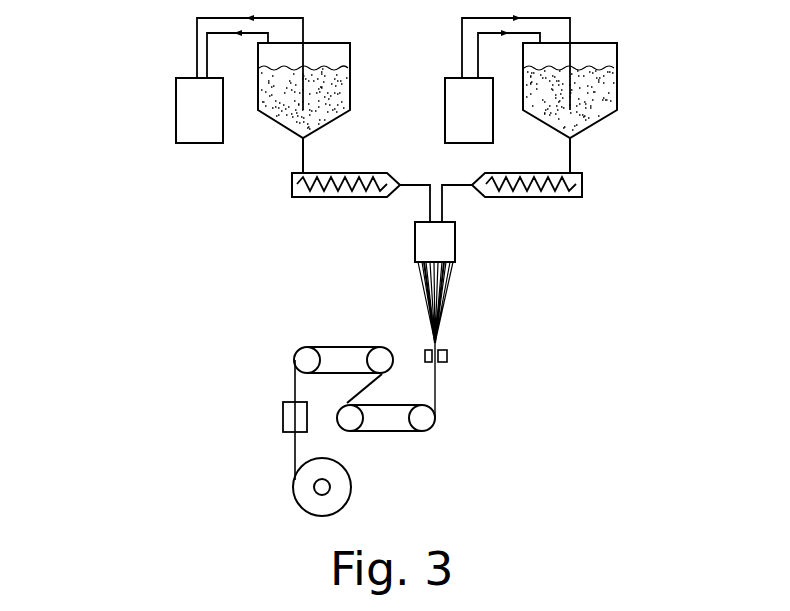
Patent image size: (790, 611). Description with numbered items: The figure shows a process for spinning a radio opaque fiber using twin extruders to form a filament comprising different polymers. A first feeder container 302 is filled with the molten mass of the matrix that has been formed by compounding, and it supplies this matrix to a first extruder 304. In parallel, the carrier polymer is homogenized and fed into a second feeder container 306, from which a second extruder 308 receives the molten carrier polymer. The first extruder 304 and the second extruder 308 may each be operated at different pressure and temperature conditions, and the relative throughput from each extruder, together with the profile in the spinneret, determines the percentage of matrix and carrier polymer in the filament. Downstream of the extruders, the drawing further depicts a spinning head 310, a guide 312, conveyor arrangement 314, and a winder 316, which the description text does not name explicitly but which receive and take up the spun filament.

The first feeder container 302 is at (303, 115).
The first extruder 304 is at (292, 195).
The second feeder container 306 is at (555, 115).
The second extruder 308 is at (580, 175).
The spinneret/die head 310 is at (455, 250).
The guide 312 is at (447, 353).
The conveyor belts 314 is at (435, 420).
The winder roll 316 is at (313, 495).